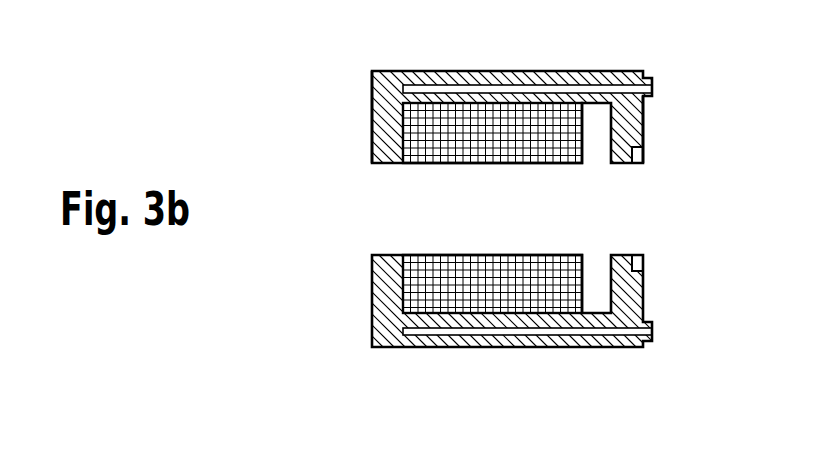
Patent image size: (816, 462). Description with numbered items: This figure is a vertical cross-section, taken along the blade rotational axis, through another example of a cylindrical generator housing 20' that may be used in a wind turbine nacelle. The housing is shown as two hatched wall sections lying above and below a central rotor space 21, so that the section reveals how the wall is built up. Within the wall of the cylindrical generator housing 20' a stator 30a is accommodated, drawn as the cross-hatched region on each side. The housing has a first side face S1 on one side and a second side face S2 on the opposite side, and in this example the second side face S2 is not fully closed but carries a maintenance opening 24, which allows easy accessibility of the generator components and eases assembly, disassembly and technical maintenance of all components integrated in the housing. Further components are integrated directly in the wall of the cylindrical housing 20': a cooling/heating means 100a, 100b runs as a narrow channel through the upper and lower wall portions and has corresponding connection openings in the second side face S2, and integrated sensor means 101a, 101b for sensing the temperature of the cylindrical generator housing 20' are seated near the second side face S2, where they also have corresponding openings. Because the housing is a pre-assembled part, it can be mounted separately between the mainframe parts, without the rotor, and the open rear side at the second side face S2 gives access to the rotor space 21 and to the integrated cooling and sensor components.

The cylindrical generator housing 20' is at (507, 90).
The rotor space 21 is at (497, 224).
The maintenance opening 24 is at (628, 210).
The stator 30a is at (432, 130).
The cooling/heating means 100a is at (505, 85).
The cooling/heating means 100b is at (502, 335).
The sensor means 101a is at (644, 158).
The sensor means 101b is at (645, 264).
The first side face S1 is at (372, 88).
The second side face S2 is at (644, 111).